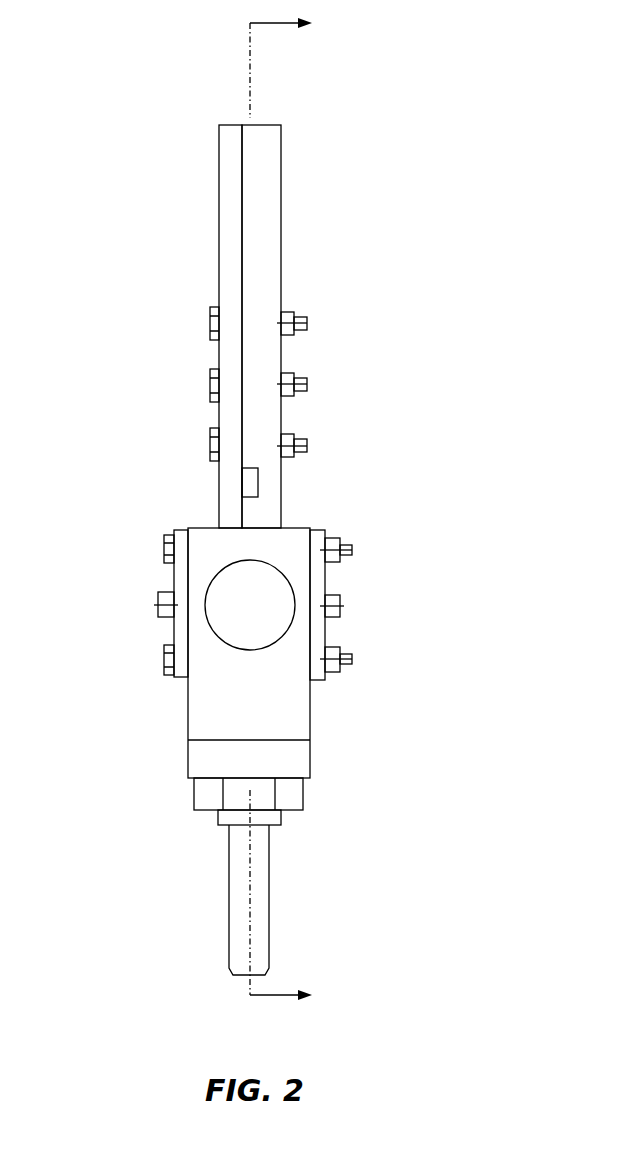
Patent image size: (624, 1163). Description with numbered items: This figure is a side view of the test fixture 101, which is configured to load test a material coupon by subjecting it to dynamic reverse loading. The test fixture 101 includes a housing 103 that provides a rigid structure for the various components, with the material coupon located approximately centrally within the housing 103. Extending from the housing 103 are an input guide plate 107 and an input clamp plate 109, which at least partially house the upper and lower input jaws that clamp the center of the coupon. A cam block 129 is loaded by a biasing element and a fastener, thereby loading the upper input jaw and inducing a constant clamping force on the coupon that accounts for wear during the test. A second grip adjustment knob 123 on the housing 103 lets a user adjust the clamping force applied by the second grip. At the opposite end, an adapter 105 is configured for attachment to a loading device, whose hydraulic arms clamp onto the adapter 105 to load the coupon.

The test fixture 101 is at (110, 104).
The housing 103 is at (188, 710).
The adapter 105 is at (229, 878).
The input guide plate 107 is at (281, 211).
The input clamp plate 109 is at (219, 193).
The second grip adjustment knob 123 is at (205, 618).
The cam block 129 is at (258, 478).